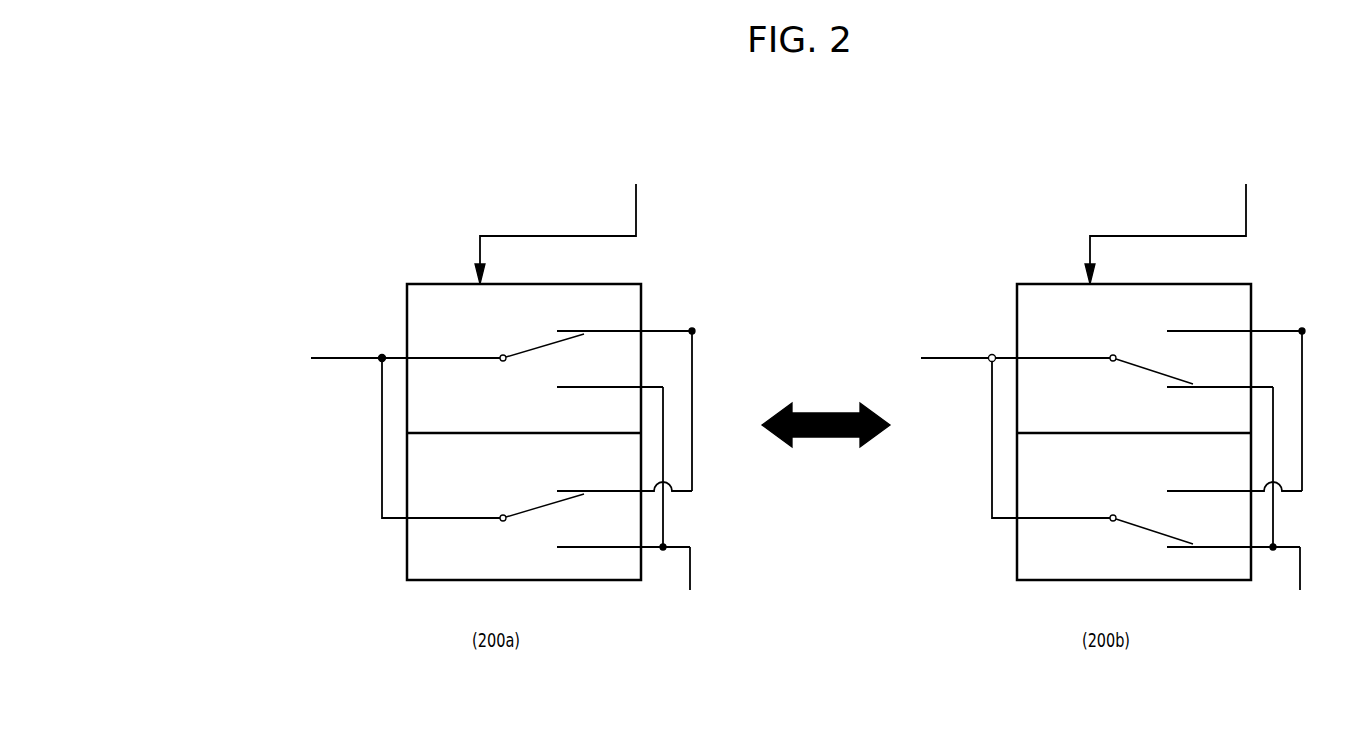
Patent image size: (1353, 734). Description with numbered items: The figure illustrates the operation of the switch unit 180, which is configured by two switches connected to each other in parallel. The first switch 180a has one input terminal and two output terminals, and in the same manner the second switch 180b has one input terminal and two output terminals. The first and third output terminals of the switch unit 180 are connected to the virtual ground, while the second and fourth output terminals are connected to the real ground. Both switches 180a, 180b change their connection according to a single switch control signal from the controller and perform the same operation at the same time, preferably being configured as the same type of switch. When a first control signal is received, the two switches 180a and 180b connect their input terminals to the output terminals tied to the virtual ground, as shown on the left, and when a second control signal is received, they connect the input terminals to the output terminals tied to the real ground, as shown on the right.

The switch unit 180 is at (758, 387).
The first switch 180a is at (407, 308).
The second switch 180b is at (405, 545).